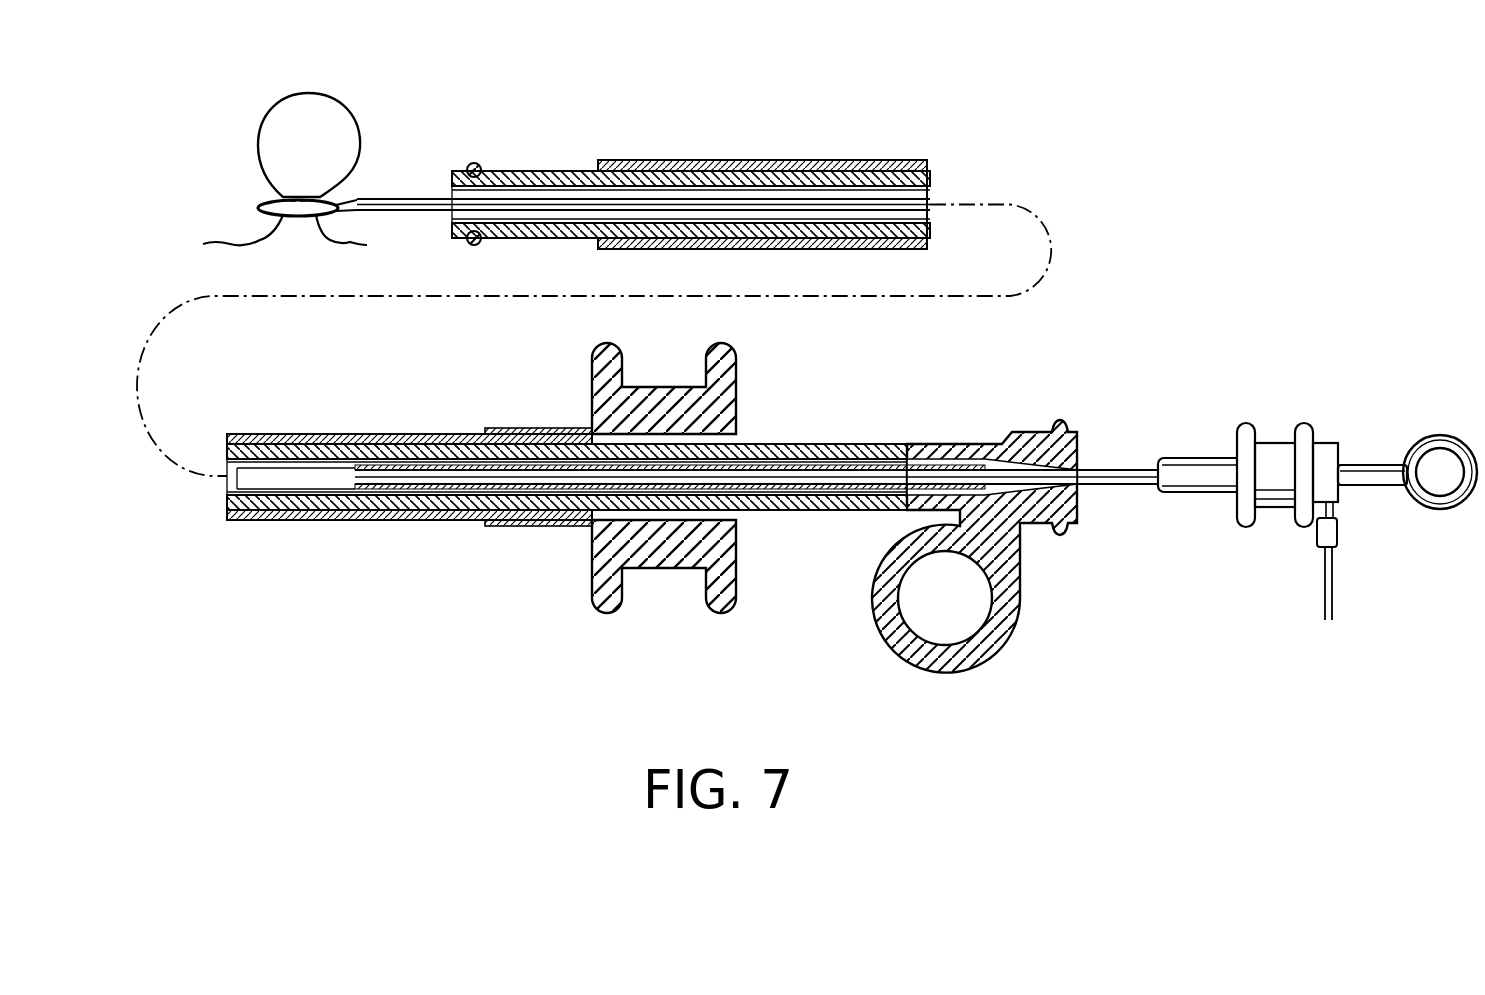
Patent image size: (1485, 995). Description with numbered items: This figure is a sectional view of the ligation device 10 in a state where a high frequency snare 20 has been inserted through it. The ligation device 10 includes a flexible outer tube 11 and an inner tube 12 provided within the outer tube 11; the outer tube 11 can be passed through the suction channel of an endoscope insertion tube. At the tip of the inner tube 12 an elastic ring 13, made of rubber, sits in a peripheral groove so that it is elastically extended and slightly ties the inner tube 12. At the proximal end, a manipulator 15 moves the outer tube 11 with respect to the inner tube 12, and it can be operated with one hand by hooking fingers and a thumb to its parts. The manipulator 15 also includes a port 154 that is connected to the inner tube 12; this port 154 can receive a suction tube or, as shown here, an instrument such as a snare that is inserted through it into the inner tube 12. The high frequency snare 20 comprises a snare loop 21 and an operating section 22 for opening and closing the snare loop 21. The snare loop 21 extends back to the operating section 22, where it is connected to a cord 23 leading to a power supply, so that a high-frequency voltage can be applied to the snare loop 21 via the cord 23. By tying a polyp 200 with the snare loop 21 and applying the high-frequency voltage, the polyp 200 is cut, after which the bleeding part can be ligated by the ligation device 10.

The ligation device 10 is at (975, 145).
The outer tube 11 is at (820, 160).
The inner tube 12 is at (540, 178).
The ring 13 is at (474, 163).
The manipulator 15 is at (775, 388).
The port 154 is at (1060, 425).
The high frequency snare 20 is at (1125, 490).
The snare loop 21 is at (263, 205).
The operating section 22 is at (1280, 425).
The cord 23 is at (1327, 598).
The polyp 200 is at (337, 123).